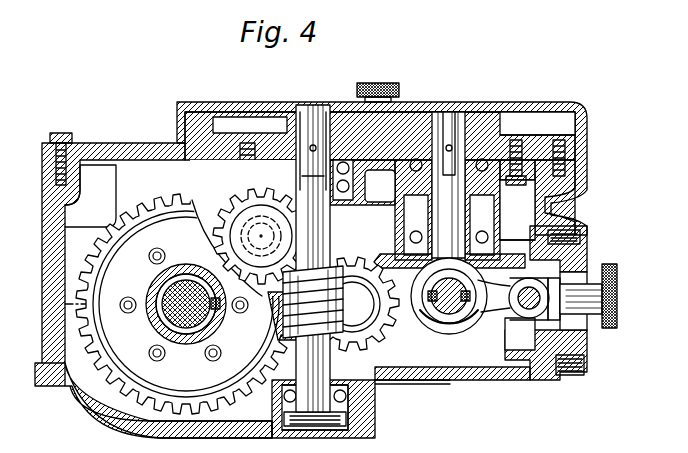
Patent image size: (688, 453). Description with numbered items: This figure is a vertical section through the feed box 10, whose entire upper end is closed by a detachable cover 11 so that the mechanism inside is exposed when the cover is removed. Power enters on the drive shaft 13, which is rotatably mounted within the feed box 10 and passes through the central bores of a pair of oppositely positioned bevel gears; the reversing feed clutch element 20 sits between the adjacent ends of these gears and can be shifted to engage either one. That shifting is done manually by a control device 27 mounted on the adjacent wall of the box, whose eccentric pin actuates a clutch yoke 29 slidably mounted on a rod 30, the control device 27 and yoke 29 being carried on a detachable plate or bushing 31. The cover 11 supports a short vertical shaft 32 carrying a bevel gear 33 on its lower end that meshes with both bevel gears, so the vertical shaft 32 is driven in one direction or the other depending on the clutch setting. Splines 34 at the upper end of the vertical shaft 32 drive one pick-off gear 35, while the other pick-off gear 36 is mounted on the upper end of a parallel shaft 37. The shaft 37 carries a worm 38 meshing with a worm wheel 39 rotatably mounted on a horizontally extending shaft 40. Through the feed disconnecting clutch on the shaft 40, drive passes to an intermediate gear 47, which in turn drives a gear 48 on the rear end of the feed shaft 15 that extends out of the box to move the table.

The feed box 10 is at (552, 207).
The detachable cover 11 is at (125, 143).
The drive shaft 13 is at (449, 304).
The feed shaft 15 is at (353, 302).
The reversing feed clutch element 20 is at (427, 336).
The control device 27 is at (601, 287).
The clutch yoke 29 is at (497, 318).
The rod 30 is at (585, 333).
The detachable plate or bushing 31 is at (586, 253).
The short vertical shaft 32 is at (459, 177).
The bevel gear 33 is at (390, 256).
The splines 34 is at (451, 117).
The pick-off gear 35 is at (419, 117).
The pick-off gear 36 is at (328, 128).
The shaft 37 is at (305, 165).
The worm 38 is at (365, 400).
The worm wheel 39 is at (125, 365).
The horizontally extending shaft 40 is at (185, 332).
The intermediate gear 47 is at (232, 198).
The gear 48 is at (380, 340).